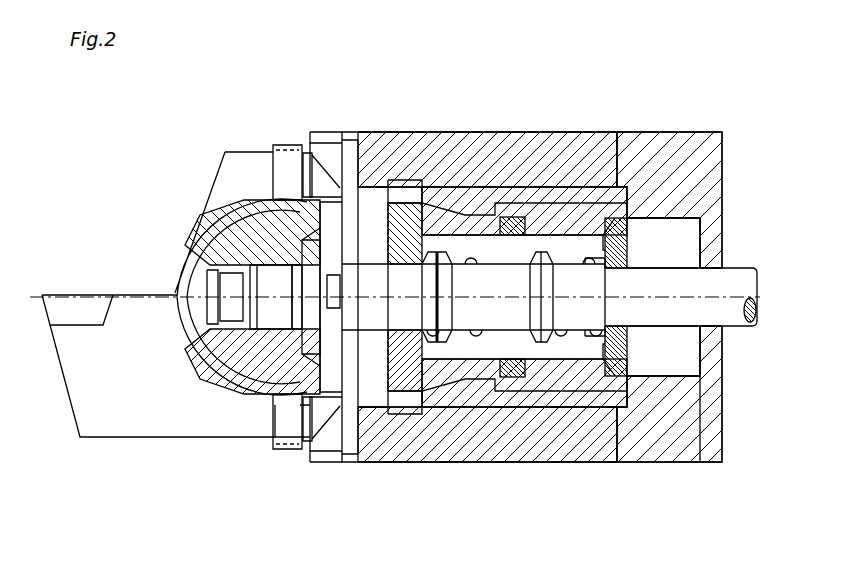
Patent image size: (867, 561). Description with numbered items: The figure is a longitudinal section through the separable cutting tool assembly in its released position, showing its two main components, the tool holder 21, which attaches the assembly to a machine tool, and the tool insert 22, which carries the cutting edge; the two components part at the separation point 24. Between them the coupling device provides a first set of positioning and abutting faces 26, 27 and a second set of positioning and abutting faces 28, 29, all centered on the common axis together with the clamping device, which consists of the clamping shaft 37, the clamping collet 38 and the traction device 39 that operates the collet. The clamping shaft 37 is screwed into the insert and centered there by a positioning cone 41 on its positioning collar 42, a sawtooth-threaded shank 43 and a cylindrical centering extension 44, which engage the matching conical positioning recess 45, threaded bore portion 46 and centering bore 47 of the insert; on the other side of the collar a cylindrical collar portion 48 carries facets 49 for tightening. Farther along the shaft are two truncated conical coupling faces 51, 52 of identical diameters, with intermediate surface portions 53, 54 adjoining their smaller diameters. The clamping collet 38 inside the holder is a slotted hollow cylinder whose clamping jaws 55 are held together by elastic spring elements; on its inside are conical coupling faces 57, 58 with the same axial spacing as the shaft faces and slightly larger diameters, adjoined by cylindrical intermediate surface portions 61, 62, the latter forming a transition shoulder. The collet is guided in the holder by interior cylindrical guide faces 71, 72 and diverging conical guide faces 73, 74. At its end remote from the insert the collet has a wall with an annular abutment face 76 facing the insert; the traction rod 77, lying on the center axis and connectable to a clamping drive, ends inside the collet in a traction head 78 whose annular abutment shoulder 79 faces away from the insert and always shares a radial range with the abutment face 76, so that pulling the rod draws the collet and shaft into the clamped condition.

The tool holder 21 is at (636, 500).
The tool insert 22 is at (118, 482).
The separation point 24 is at (296, 498).
The first positioning and abutting face 26 is at (357, 140).
The first positioning and abutting face 27 is at (348, 140).
The second positioning and abutting face 28 is at (312, 150).
The second positioning and abutting face 29 is at (286, 143).
The clamping shaft 37 is at (473, 240).
The clamping collet 38 is at (402, 445).
The traction device 39 is at (712, 410).
The positioning cone 41 is at (272, 195).
The positioning collar 42 is at (262, 196).
The threaded shank 43 is at (215, 200).
The centering extension 44 is at (210, 287).
The conical positioning recess 45 is at (263, 340).
The threaded bore portion 46 is at (258, 345).
The centering bore 47 is at (225, 330).
The cylindrical collar portion 48 is at (296, 330).
The facet 49 is at (345, 430).
The conical coupling face 51 is at (443, 262).
The conical coupling face 52 is at (540, 185).
The intermediate surface portion 53 is at (398, 178).
The intermediate surface portion 54 is at (497, 212).
The clamping jaws 55 is at (573, 207).
The conical coupling face 57 is at (456, 402).
The conical coupling face 58 is at (535, 410).
The intermediate surface portion 61 is at (440, 250).
The intermediate surface portion 62 is at (516, 248).
The cylindrical guide face 71 is at (476, 420).
The cylindrical guide face 72 is at (598, 408).
The conical guide face 73 is at (426, 410).
The conical guide face 74 is at (562, 405).
The abutment face 76 is at (622, 210).
The traction rod 77 is at (735, 317).
The traction head 78 is at (642, 351).
The abutment shoulder 79 is at (610, 260).